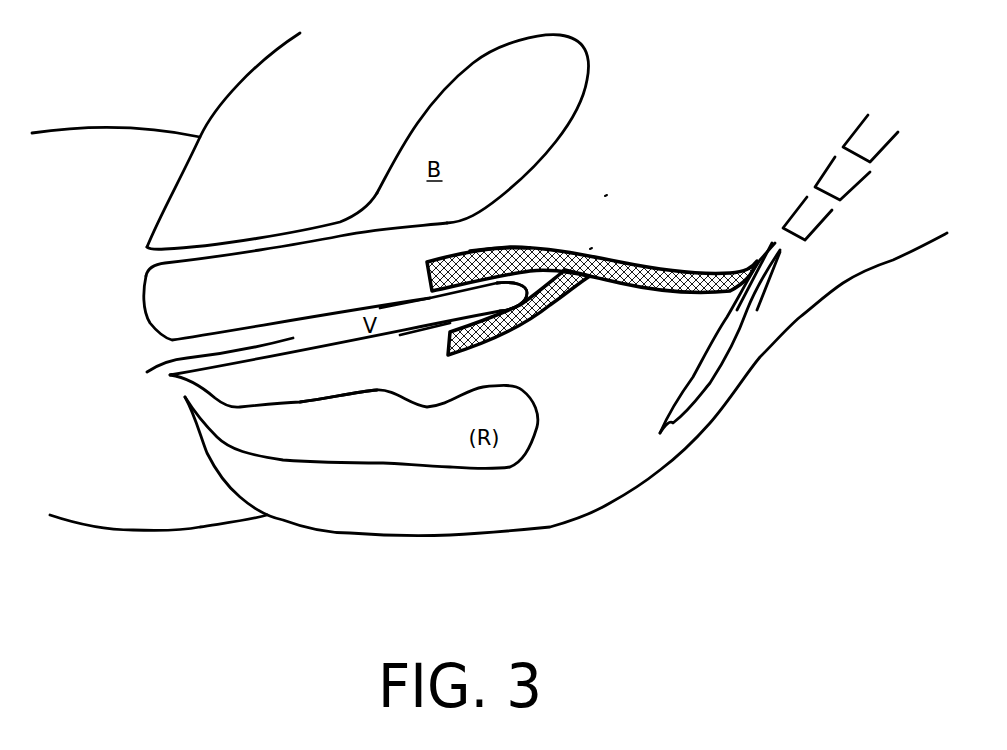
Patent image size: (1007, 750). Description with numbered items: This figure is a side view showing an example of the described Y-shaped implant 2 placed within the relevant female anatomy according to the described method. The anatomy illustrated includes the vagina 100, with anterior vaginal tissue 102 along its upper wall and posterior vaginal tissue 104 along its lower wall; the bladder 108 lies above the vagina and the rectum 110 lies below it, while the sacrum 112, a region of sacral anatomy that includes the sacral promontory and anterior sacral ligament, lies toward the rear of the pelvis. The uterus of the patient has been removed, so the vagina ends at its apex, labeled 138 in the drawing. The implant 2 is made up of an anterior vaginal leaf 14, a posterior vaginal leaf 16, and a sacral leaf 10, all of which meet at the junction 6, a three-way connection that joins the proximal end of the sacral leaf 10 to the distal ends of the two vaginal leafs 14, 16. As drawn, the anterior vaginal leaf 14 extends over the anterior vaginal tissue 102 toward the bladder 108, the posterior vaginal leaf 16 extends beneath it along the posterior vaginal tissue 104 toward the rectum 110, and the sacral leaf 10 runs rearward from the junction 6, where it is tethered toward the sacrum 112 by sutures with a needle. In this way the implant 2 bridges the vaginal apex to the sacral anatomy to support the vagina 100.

The implant 2 is at (609, 188).
The junction 6 is at (594, 241).
The sacral leaf 10 is at (656, 274).
The anterior vaginal leaf 14 is at (514, 250).
The posterior vaginal leaf 16 is at (538, 312).
The vagina 100 is at (138, 377).
The anterior vaginal tissue 102 is at (399, 290).
The posterior vaginal tissue 104 is at (418, 345).
The bladder 108 is at (475, 126).
The rectum 110 is at (400, 449).
The sacrum 112 is at (772, 266).
The vaginal apex / cuff 138 is at (470, 311).